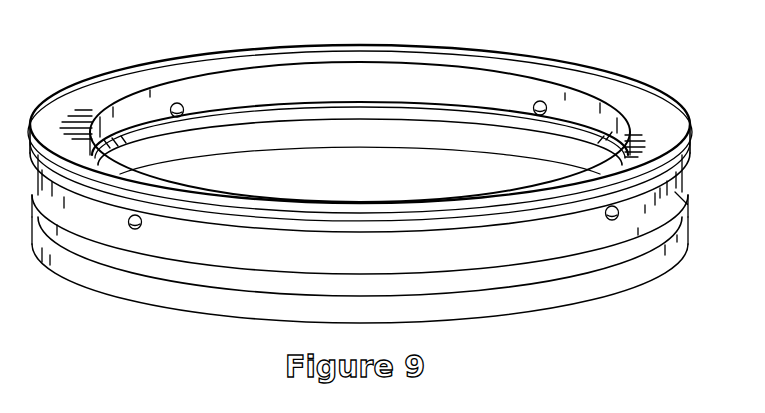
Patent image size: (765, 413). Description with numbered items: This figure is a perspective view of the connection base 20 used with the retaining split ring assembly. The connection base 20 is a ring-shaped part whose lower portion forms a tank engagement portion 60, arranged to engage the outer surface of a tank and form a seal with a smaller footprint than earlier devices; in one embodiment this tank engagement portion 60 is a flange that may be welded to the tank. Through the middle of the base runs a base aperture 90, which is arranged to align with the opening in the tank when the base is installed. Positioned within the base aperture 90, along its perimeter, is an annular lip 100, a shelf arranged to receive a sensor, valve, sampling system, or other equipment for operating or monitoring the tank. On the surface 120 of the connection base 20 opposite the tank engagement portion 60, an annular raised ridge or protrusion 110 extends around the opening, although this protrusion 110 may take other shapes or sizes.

The connection base 20 is at (472, 281).
The tank engagement portion 60 is at (102, 281).
The base aperture 90 is at (432, 170).
The lip 100 is at (207, 117).
The annular raised ridge 110 is at (676, 128).
The surface 120 is at (643, 108).